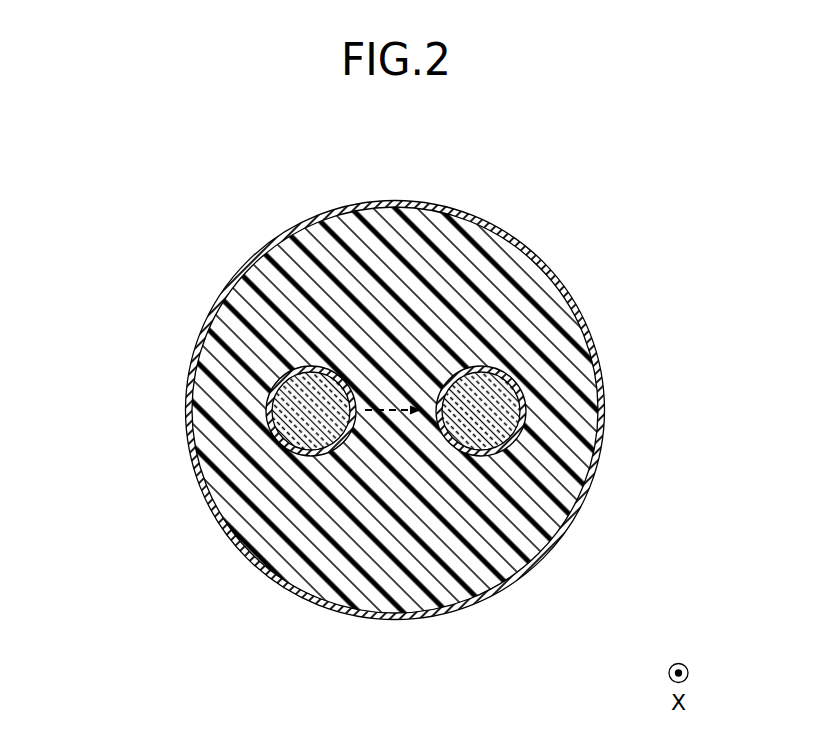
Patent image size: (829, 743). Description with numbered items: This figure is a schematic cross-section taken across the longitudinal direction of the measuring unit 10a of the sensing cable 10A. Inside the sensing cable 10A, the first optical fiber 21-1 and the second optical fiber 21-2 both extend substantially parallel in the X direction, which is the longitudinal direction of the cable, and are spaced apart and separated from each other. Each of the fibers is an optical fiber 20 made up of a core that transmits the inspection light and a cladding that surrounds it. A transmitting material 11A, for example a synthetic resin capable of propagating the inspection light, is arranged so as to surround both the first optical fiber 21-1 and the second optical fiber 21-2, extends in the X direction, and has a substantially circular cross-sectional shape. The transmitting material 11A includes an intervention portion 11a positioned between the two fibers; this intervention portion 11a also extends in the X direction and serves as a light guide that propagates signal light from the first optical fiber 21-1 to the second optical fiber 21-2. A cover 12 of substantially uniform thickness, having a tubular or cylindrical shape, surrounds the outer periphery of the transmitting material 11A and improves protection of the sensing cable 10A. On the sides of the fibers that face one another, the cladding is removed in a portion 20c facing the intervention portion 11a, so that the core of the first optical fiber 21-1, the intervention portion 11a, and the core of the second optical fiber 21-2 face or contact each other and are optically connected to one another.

The measuring unit 10a is at (398, 395).
The sensing cable 10A is at (398, 395).
The transmitting material 11A is at (222, 273).
The intervention portion 11a is at (381, 386).
The cover 12 is at (546, 264).
The optical fiber 20 is at (398, 411).
The first optical fiber 21-1 is at (189, 411).
The second optical fiber 21-2 is at (604, 411).
The portion facing each other 20c is at (429, 411).